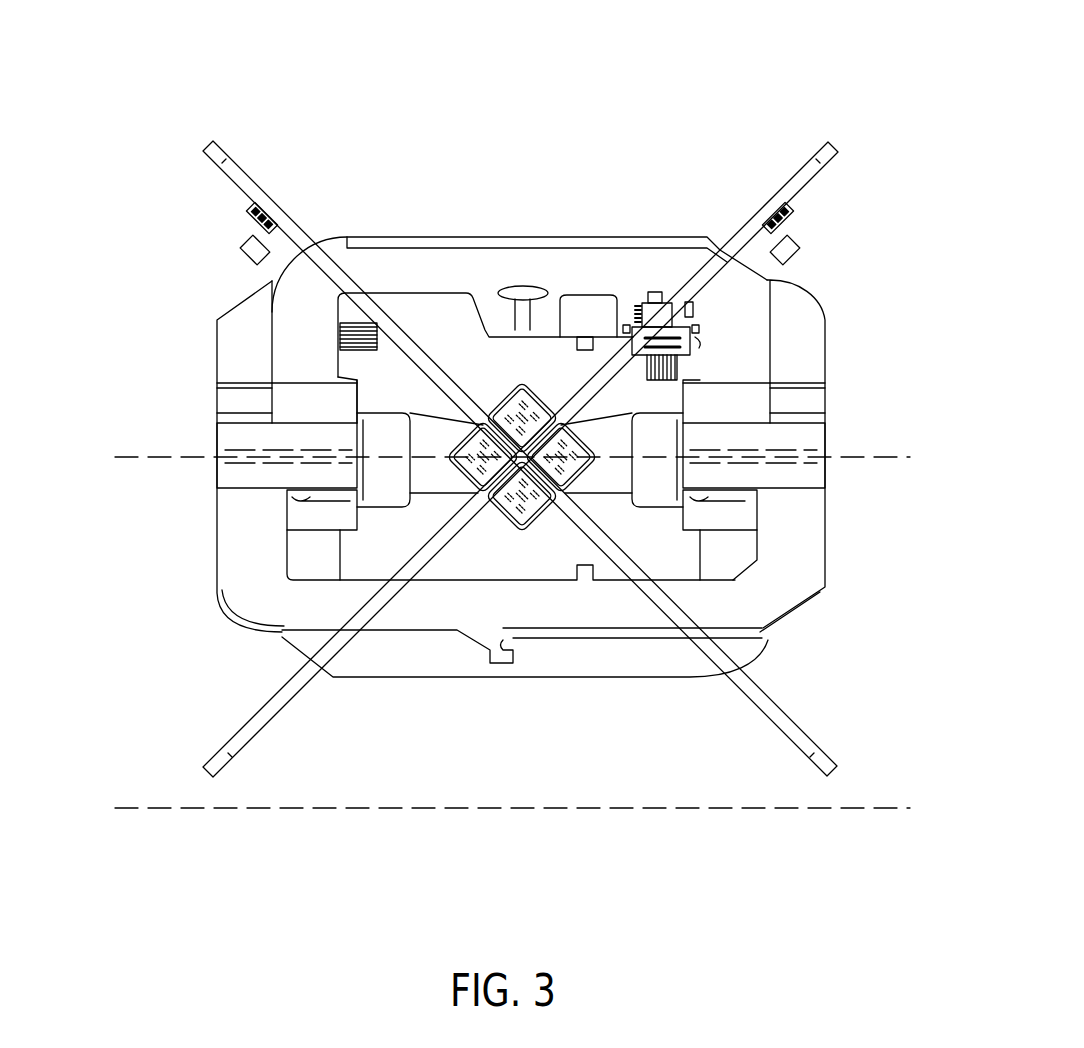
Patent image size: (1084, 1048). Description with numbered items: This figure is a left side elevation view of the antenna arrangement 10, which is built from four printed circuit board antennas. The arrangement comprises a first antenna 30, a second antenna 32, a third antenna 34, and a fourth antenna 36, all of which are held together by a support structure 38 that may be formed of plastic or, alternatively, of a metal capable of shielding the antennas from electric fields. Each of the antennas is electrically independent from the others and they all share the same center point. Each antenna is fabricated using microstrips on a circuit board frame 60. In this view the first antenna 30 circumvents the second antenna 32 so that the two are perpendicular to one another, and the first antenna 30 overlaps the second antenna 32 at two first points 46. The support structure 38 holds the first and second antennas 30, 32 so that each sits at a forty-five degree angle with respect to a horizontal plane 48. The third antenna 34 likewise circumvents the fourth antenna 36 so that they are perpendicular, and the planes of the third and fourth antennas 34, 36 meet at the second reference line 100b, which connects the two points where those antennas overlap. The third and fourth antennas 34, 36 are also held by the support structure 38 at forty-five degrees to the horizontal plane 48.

The antenna arrangement 10 is at (536, 85).
The first antenna 30 is at (767, 692).
The second antenna 32 is at (800, 167).
The third antenna 34 is at (245, 537).
The fourth antenna 36 is at (492, 263).
The support structure 38 is at (660, 445).
The first points 46 is at (527, 463).
The horizontal plane 48 is at (697, 812).
The circuit board frame 60 is at (243, 163).
The second reference line 100b is at (163, 455).